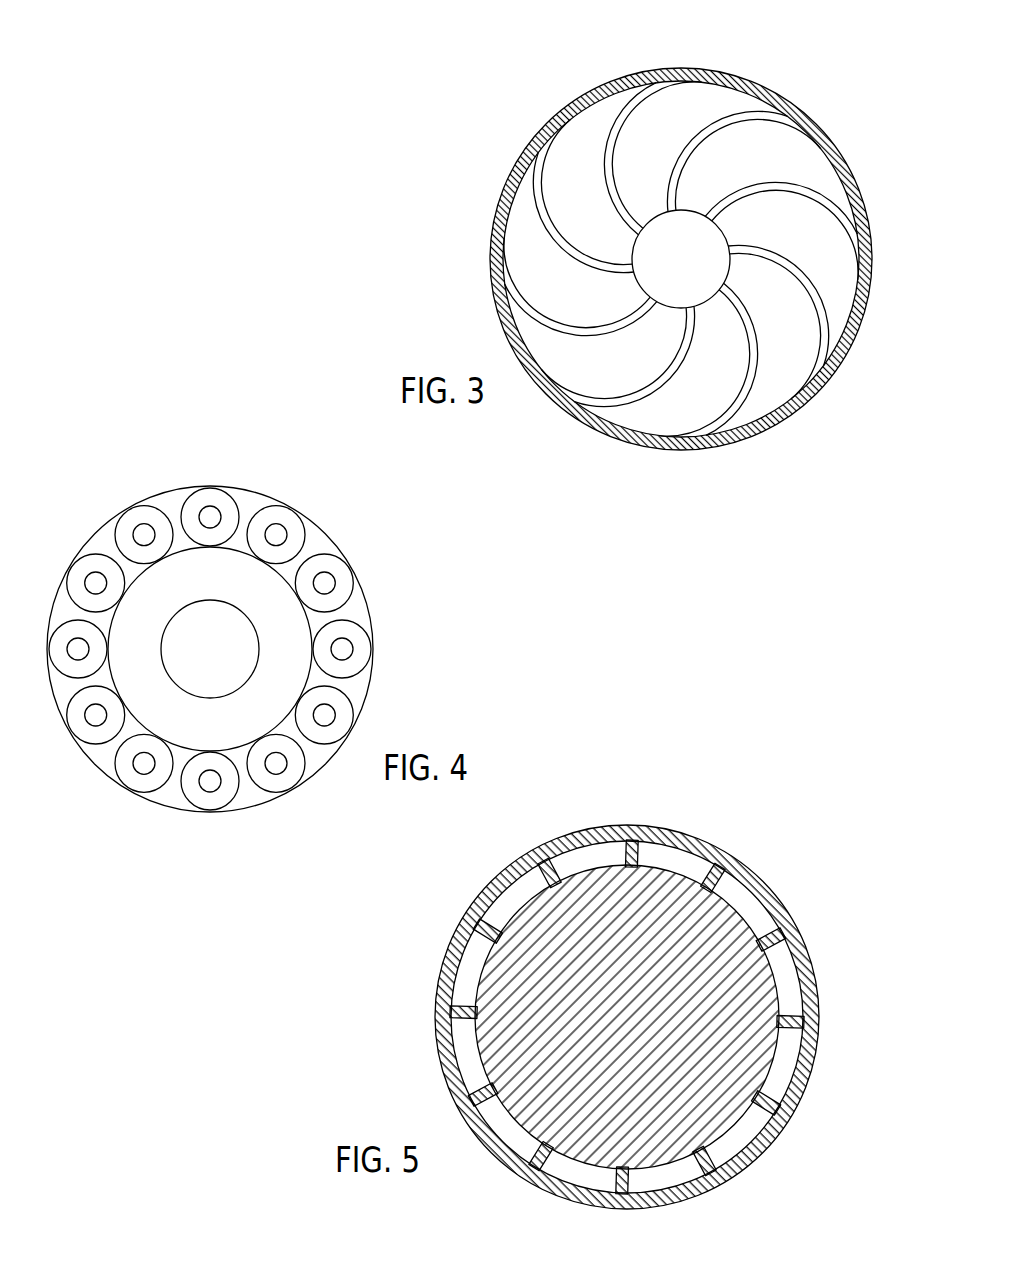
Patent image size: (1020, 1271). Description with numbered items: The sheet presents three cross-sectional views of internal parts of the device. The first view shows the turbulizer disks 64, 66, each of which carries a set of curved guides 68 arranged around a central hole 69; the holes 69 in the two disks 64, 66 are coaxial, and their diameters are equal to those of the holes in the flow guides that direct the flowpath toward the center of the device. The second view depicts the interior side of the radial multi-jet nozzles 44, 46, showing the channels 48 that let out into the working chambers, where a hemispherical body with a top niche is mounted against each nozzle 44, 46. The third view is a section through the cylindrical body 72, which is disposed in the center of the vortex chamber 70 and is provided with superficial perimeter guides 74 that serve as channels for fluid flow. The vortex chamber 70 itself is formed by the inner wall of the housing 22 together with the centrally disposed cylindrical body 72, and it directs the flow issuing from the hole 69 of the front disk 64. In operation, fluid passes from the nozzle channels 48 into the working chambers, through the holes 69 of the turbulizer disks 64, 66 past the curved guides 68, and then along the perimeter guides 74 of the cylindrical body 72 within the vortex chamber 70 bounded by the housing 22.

In FIG. 5, the housing 22 is at (627, 991).
In FIG. 4, the radial multi-jet nozzle 44 is at (209, 612).
In FIG. 4, the radial multi-jet nozzle 46 is at (209, 612).
In FIG. 4, the channels 48 is at (85, 442).
In FIG. 3, the turbulizer disk 64 is at (624, 268).
In FIG. 3, the turbulizer disk 66 is at (624, 268).
In FIG. 3, the curved guides 68 is at (681, 282).
In FIG. 3, the central hole 69 is at (735, 181).
In FIG. 5, the vortex chamber 70 is at (631, 991).
In FIG. 5, the cylindrical body 72 is at (537, 997).
In FIG. 5, the superficial perimeter guides 74 is at (837, 827).